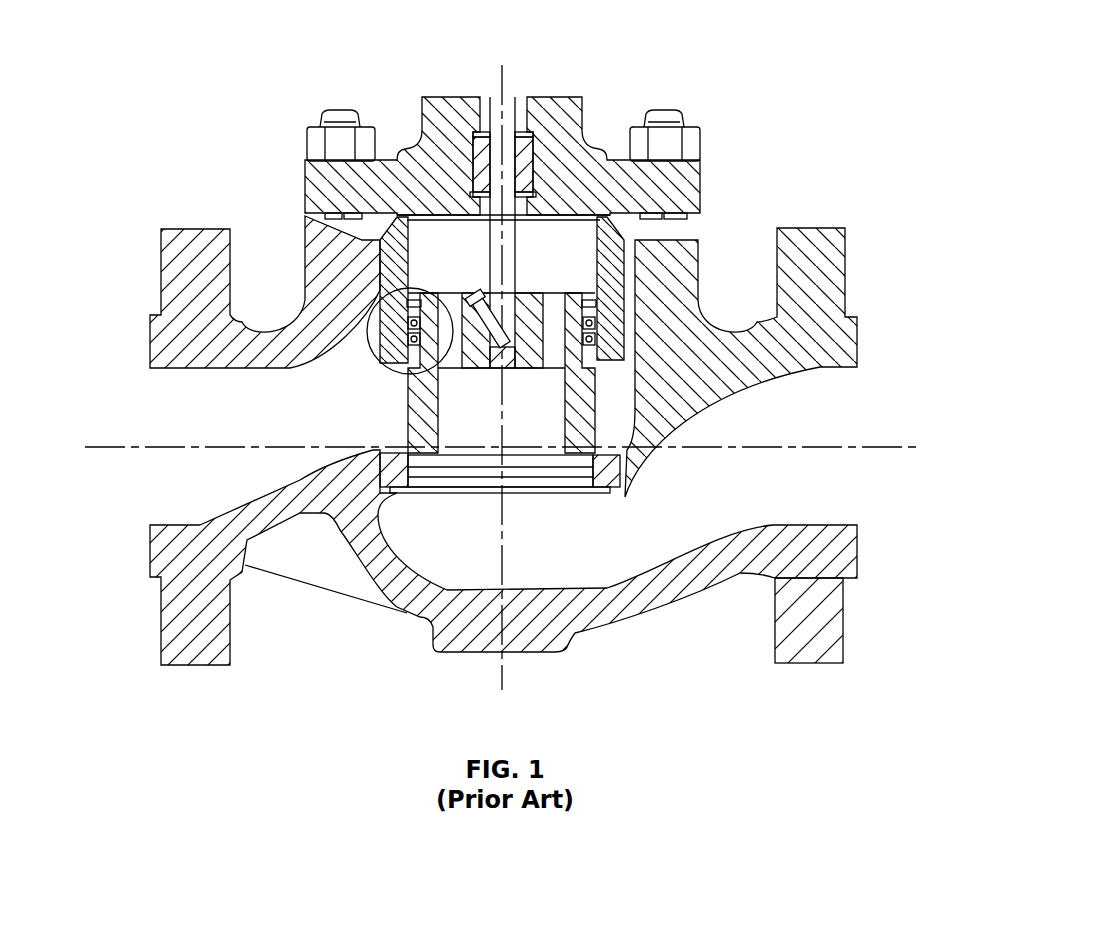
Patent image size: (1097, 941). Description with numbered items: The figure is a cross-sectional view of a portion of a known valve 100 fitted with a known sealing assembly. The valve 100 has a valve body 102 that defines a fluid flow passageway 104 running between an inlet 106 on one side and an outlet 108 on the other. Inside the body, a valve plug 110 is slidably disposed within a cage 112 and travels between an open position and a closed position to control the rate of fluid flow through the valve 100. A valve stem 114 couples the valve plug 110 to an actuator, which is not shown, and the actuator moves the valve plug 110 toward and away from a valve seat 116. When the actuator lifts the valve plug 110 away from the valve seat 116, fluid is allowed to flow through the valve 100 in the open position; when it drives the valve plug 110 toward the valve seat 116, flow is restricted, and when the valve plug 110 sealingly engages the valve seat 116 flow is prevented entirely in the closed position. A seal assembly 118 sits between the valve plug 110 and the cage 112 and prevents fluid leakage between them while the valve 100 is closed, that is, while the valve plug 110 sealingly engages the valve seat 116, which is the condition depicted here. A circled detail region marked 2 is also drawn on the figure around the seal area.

The valve 100 is at (510, 359).
The valve body 102 is at (650, 612).
The fluid flow passageway 104 is at (526, 551).
The inlet 106 is at (150, 488).
The outlet 108 is at (857, 398).
The valve plug 110 is at (440, 405).
The cage 112 is at (385, 263).
The valve stem 114 is at (490, 252).
The valve seat 116 is at (622, 490).
The seal assembly 118 is at (598, 332).
The detail area of FIG. 2 is at (356, 368).